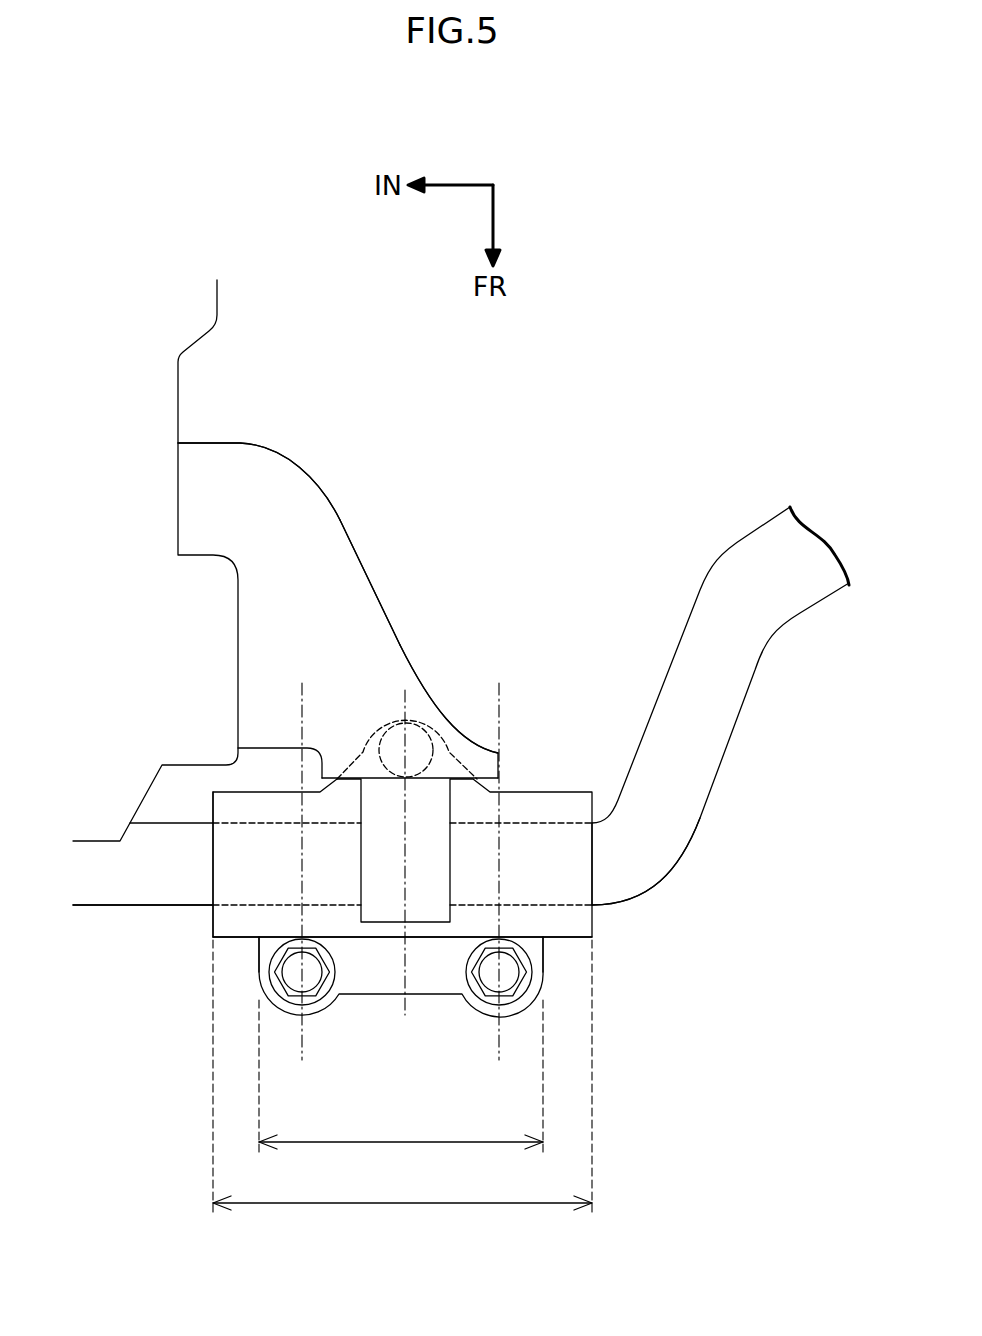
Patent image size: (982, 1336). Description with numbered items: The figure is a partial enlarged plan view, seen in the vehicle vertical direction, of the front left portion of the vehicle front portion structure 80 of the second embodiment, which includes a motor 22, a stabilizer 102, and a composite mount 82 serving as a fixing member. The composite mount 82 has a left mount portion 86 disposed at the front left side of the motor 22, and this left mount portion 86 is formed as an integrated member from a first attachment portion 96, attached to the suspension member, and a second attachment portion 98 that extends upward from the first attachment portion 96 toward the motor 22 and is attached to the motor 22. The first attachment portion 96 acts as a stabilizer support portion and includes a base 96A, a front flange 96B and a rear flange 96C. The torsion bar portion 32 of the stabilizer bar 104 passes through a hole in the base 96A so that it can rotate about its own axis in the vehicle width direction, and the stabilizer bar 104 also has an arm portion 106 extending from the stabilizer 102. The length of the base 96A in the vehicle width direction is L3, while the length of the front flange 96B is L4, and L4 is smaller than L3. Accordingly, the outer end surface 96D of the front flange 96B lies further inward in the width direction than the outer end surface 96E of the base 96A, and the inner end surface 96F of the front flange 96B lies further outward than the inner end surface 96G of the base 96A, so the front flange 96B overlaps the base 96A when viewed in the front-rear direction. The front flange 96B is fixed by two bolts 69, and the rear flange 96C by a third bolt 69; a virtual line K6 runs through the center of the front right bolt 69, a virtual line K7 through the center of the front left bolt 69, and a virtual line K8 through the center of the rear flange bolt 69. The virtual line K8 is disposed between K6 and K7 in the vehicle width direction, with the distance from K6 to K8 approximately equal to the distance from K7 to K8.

The motor 22 is at (180, 397).
The torsion bar portion 32 is at (103, 890).
The bolt 69 is at (393, 717).
The vehicle front portion structure 80 is at (585, 445).
The composite mount 82 is at (418, 512).
The left mount portion 86 is at (415, 620).
The first attachment portion 96 is at (530, 772).
The base 96A is at (582, 920).
The front flange 96B is at (422, 980).
The rear flange 96C is at (447, 713).
The outer end surface 96D is at (545, 968).
The outer end surface 96E is at (592, 857).
The inner end surface 96F is at (260, 968).
The inner end surface 96G is at (213, 860).
The second attachment portion 98 is at (333, 508).
The stabilizer 102 is at (682, 883).
The stabilizer bar 104 is at (163, 907).
The arm portion 106 is at (728, 692).
The virtual line K6 is at (300, 703).
The virtual line K7 is at (500, 707).
The virtual line K8 is at (407, 857).
The length of the base L3 is at (407, 1207).
The length of the front flange L4 is at (407, 1146).